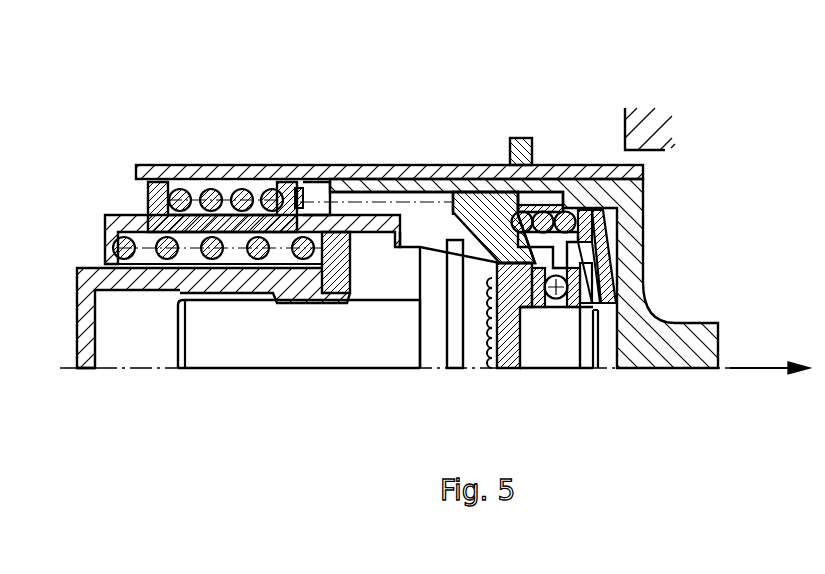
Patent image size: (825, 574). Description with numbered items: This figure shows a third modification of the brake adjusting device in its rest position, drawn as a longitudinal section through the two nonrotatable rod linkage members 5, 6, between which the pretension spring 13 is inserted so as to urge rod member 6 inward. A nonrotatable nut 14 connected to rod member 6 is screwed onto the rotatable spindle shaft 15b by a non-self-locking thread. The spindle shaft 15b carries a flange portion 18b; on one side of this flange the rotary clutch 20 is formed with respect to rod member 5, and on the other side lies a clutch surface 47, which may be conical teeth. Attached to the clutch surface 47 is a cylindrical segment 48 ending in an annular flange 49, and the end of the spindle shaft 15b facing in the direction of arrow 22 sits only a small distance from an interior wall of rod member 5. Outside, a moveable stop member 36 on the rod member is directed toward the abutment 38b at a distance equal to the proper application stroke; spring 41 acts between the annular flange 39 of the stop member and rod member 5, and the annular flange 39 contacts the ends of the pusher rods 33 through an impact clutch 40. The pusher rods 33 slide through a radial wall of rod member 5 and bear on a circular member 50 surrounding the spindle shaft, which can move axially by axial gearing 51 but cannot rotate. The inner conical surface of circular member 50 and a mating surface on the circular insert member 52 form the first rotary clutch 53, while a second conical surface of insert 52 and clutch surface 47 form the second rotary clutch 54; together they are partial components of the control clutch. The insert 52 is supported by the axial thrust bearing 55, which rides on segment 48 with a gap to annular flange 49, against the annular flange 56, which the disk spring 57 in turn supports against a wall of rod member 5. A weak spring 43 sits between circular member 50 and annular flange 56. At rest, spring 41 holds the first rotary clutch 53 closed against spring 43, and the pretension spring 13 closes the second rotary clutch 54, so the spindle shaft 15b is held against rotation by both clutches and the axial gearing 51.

The rod member 5 is at (660, 336).
The rod member 6 is at (90, 316).
The pretension spring 13 is at (160, 240).
The nut 14 is at (317, 283).
The spindle shaft 15b is at (235, 334).
The flange portion 18b is at (455, 344).
The rotary clutch 20 is at (427, 245).
The arrow 22 is at (773, 364).
The pusher rods 33 is at (368, 202).
The stop member 36 is at (278, 186).
The abutment 38b is at (640, 130).
The annular flange 39 is at (286, 207).
The impact clutch 40 is at (299, 196).
The spring 41 is at (210, 192).
The weak spring 43 is at (555, 232).
The clutch surface 47 is at (502, 344).
The cylindrical segment 48 is at (552, 346).
The annular flange 49 is at (589, 350).
The circular member 50 is at (512, 195).
The axial gearing 51 is at (535, 194).
The circular insert member 52 is at (528, 305).
The first rotary clutch 53 is at (500, 255).
The second rotary clutch 54 is at (505, 292).
The axial thrust bearing 55 is at (614, 273).
The annular flange 56 is at (582, 251).
The disk spring 57 is at (603, 220).